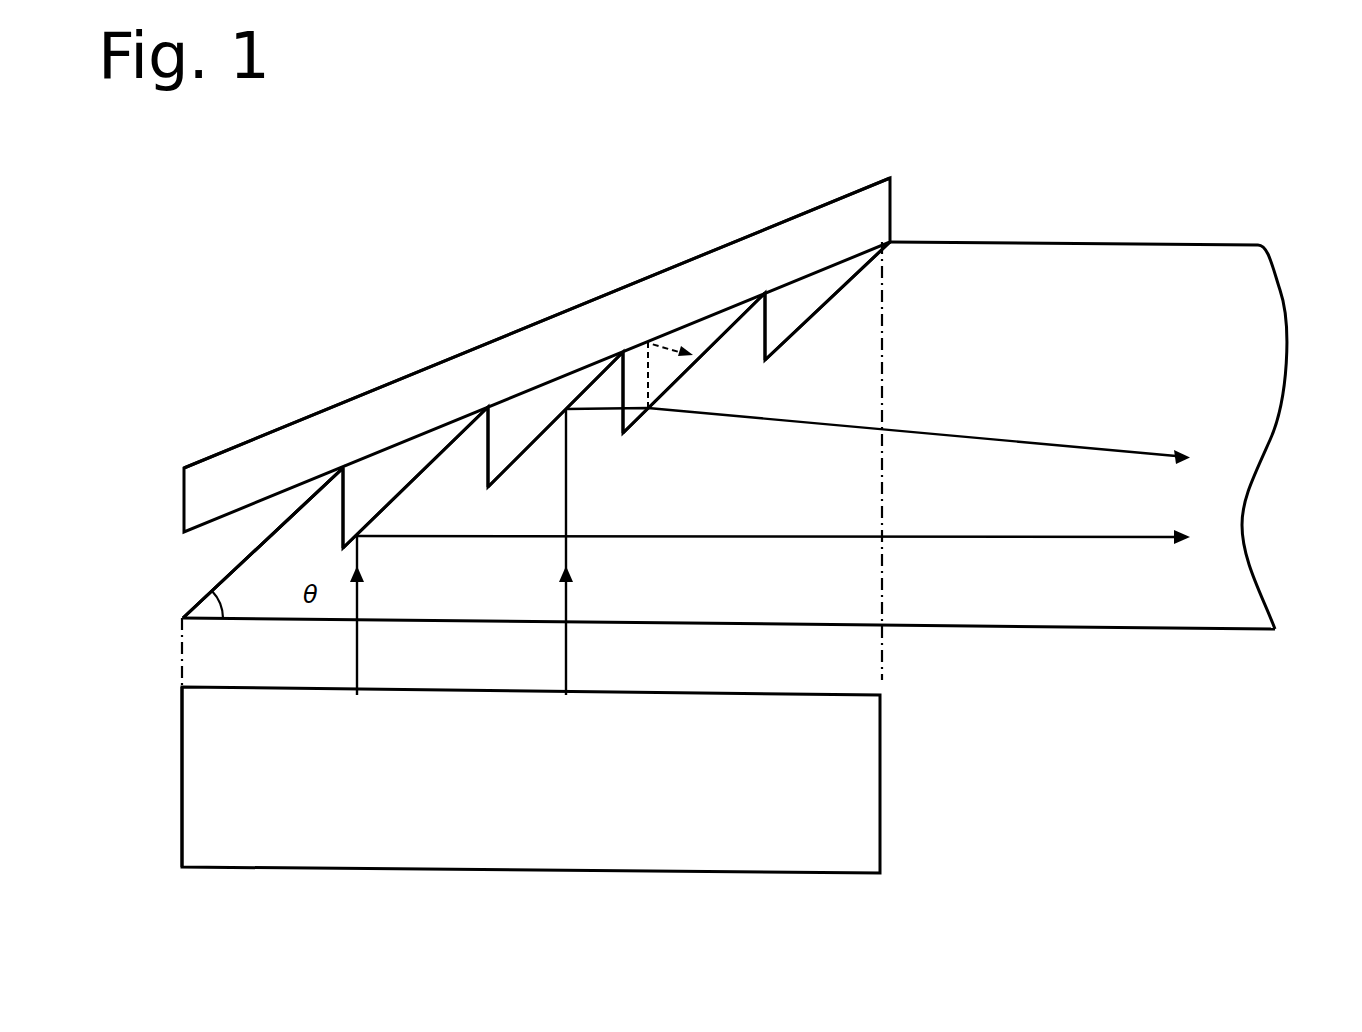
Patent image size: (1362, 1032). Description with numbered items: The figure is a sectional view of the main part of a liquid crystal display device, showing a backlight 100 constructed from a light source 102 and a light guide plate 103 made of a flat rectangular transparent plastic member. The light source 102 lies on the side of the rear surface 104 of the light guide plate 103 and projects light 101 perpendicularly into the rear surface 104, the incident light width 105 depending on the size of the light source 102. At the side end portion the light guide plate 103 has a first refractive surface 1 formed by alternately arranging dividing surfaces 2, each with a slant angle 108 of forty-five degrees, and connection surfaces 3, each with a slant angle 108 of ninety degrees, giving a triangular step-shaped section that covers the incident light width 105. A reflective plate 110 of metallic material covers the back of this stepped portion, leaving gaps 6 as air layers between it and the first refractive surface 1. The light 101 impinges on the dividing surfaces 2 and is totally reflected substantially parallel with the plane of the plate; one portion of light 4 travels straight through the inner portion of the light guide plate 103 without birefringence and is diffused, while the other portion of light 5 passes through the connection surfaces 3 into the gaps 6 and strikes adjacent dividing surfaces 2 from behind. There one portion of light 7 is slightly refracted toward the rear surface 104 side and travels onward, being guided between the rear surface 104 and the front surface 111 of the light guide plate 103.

The first refractive surface 1 is at (623, 475).
The dividing surface 2 is at (252, 551).
The connection surface 3 is at (342, 530).
The one portion of light 4 is at (721, 539).
The other portion of light 5 is at (580, 552).
The gap 6 is at (377, 467).
The one portion of light 7 is at (769, 420).
The backlight 100 is at (385, 268).
The light 101 is at (359, 590).
The light source 102 is at (797, 869).
The light guide plate 103 is at (1282, 285).
The rear surface 104 is at (1185, 630).
The incident light width 105 is at (166, 658).
The slant angle 108 is at (198, 605).
The reflective plate 110 is at (862, 197).
The front surface 111 is at (1163, 245).